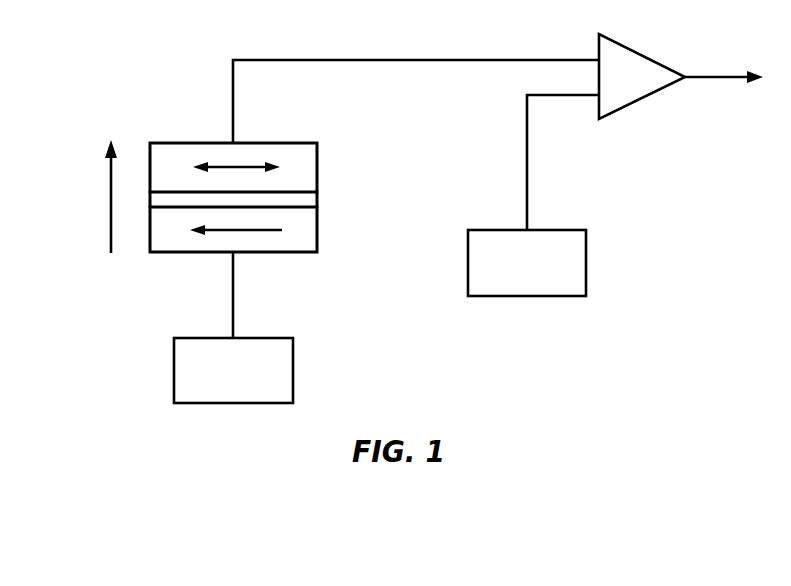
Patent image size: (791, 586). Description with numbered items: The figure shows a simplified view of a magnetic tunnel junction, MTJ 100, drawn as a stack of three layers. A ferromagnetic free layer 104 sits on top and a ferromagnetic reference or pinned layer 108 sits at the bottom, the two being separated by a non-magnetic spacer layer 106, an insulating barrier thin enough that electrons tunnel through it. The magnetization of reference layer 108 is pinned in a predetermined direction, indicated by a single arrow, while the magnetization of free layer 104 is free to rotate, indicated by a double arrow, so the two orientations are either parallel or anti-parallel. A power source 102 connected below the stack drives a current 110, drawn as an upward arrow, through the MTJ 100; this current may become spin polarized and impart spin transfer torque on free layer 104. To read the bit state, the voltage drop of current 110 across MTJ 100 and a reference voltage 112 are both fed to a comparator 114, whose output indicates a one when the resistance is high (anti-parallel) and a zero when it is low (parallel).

The MTJ 100 is at (237, 160).
The power source 102 is at (270, 338).
The ferromagnetic free layer 104 is at (318, 169).
The non-magnetic spacer layer 106 is at (318, 199).
The ferromagnetic reference layer 108 is at (318, 232).
The current 110 is at (111, 205).
The reference voltage 112 is at (551, 230).
The comparator 114 is at (632, 47).